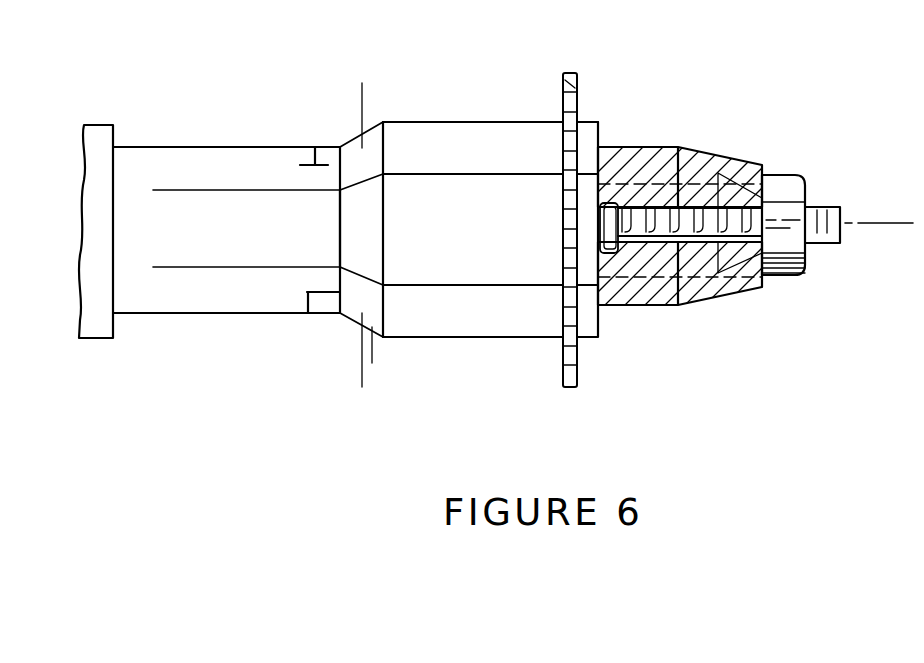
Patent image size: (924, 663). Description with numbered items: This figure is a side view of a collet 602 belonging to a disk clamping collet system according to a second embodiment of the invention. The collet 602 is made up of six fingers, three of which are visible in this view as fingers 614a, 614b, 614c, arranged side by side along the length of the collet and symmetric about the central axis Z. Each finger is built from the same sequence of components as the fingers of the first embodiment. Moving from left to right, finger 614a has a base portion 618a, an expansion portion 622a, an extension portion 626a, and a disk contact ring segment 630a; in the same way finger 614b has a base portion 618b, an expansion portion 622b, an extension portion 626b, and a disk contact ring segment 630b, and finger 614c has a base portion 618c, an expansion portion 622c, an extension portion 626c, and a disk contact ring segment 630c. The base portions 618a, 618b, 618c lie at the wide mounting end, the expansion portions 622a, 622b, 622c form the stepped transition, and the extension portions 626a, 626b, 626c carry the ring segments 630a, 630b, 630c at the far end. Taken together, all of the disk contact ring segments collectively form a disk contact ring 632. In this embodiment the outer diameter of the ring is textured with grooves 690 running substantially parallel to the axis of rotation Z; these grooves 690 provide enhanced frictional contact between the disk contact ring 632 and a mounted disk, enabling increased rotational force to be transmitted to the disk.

The collet 602 is at (150, 133).
The finger 614a is at (315, 147).
The finger 614b is at (285, 213).
The finger 614c is at (308, 313).
The base portion 618a is at (265, 185).
The base portion 618b is at (263, 240).
The base portion 618c is at (263, 304).
The expansion portion 622a is at (373, 155).
The expansion portion 622b is at (363, 243).
The expansion portion 622c is at (372, 308).
The extension portion 626a is at (508, 166).
The extension portion 626b is at (513, 241).
The extension portion 626c is at (495, 327).
The disk contact ring segment 630a is at (578, 82).
The disk contact ring segment 630b is at (563, 265).
The disk contact ring segment 630c is at (568, 370).
The disk contact ring 632 is at (572, 72).
The grooves 690 is at (563, 82).
The axis Z is at (870, 226).